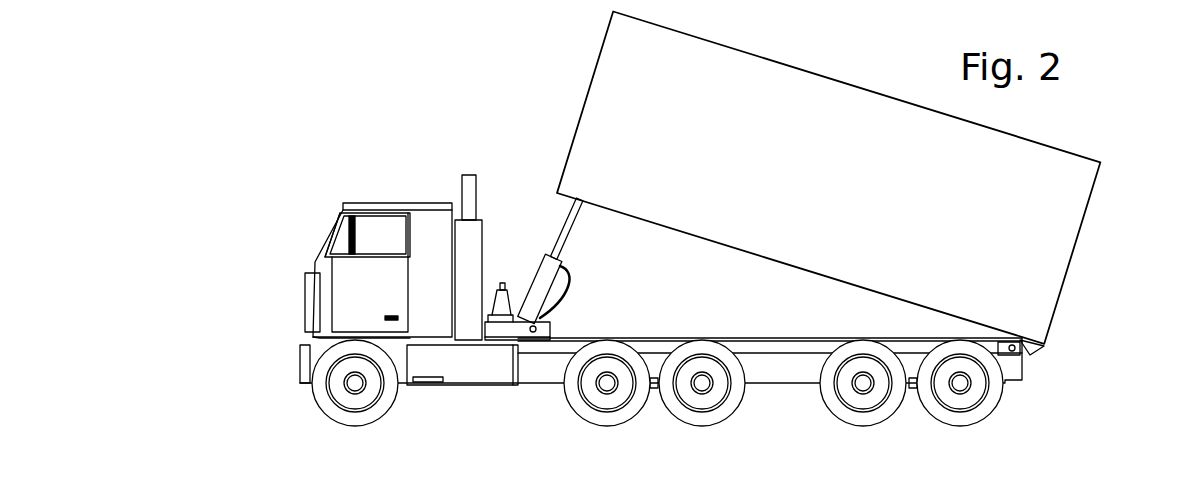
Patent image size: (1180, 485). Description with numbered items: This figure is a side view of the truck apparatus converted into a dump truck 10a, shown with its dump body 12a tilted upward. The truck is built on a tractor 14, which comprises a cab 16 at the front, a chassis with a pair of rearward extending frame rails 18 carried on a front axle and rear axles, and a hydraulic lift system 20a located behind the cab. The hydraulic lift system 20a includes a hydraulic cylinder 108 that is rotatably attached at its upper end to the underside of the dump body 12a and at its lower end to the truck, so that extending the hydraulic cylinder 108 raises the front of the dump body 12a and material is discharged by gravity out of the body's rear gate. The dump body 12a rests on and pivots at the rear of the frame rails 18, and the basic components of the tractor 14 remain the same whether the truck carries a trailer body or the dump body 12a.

The dump truck 10a is at (375, 133).
The dump body 12a is at (1055, 150).
The tractor 14 is at (313, 223).
The cab 16 is at (378, 203).
The frame rails 18 is at (765, 345).
The hydraulic lift system 20a is at (520, 250).
The hydraulic cylinder 108 is at (568, 242).